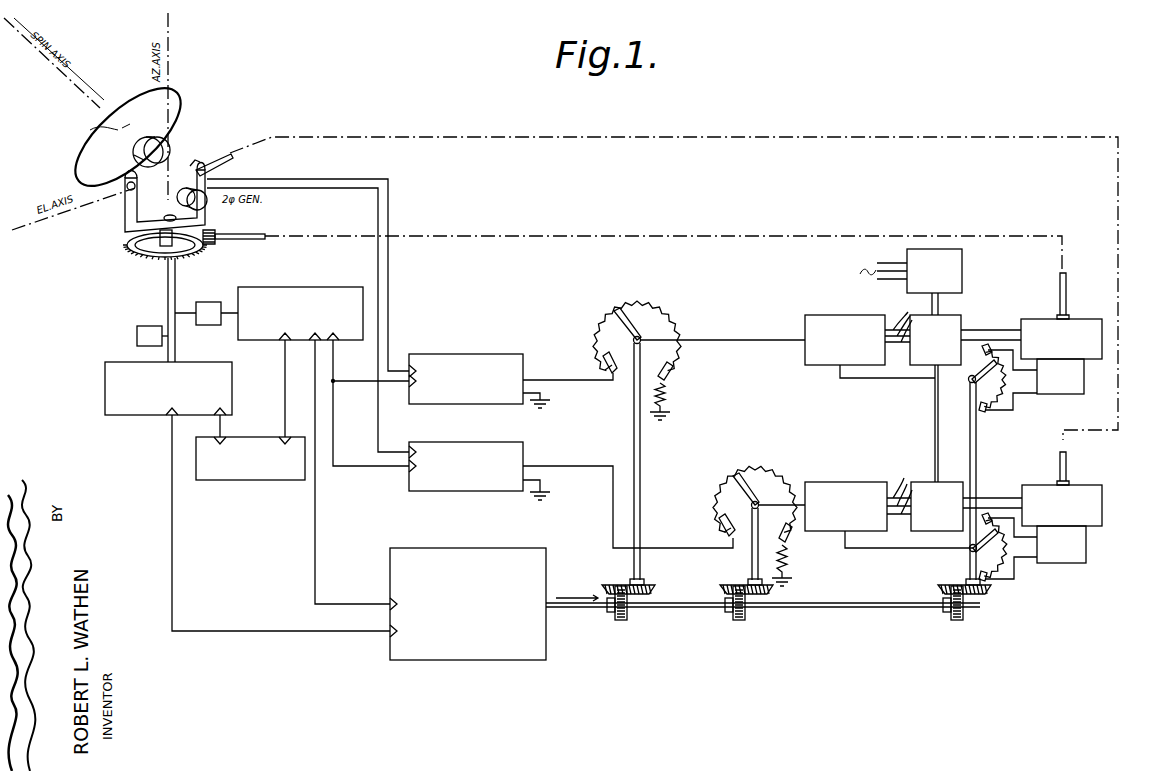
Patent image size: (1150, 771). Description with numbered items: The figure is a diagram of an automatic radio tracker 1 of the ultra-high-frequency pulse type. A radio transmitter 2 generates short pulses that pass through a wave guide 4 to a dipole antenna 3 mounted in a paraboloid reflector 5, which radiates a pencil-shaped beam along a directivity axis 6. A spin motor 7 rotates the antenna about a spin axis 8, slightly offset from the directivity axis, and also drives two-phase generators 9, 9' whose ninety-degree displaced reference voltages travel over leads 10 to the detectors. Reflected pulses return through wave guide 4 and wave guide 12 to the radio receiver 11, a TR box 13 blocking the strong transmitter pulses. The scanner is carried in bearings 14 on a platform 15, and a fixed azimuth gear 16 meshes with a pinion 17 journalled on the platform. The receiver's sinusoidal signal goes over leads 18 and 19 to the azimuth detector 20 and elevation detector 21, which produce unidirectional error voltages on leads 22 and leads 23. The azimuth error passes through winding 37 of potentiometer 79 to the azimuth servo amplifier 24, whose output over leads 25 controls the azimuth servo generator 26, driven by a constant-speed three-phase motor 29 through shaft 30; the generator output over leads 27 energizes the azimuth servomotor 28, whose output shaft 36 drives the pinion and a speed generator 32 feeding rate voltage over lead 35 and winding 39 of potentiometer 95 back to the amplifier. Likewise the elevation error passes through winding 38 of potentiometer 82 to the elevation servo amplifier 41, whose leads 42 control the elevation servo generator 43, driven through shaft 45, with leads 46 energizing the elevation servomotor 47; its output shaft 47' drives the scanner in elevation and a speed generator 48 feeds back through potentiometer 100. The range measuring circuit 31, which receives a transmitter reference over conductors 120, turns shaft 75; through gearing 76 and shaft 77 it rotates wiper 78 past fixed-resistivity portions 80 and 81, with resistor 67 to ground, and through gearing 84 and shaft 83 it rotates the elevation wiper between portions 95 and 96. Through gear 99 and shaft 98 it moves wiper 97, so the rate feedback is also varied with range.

The radio tracker 1 is at (195, 86).
The radio transmitter 2 is at (104, 394).
The antenna 3 is at (78, 148).
The wave guide 4 is at (164, 292).
The paraboloid reflector 5 is at (84, 133).
The directivity axis 6 is at (52, 80).
The spin motor 7 is at (180, 146).
The spin axis 8 is at (96, 100).
The two-phase generator 9 is at (146, 198).
The two-phase generator 9' is at (204, 203).
The leads 10 is at (378, 207).
The radio receiver 11 is at (293, 288).
The wave guide 12 is at (184, 316).
The TR box 13 is at (209, 302).
The bearings 14 is at (222, 170).
The platform 15 is at (142, 248).
The fixed azimuth gear 16 is at (194, 250).
The pinion 17 is at (214, 242).
The lead 18 is at (353, 384).
The lead 19 is at (353, 470).
The azimuth detector 20 is at (455, 353).
The elevation detector 21 is at (467, 441).
The leads 22 is at (544, 386).
The leads 23 is at (546, 470).
The azimuth servo amplifier 24 is at (814, 315).
The amplifier to generator leads 25 is at (902, 330).
The azimuth servo generator 26 is at (958, 322).
The generator to motor leads 27 is at (1004, 314).
The azimuth servomotor 28 is at (1088, 319).
The three-phase motor 29 is at (962, 258).
The shaft 30 is at (940, 304).
The range measuring circuit 31 is at (469, 548).
The speed generator 32 is at (1062, 388).
The feedback lead 35 is at (880, 380).
The output shaft 36 is at (1066, 282).
The potentiometer winding 37 is at (664, 316).
The potentiometer winding 38 is at (772, 470).
The potentiometer winding 39 is at (996, 400).
The elevation servo amplifier 41 is at (834, 482).
The leads 42 is at (898, 496).
The elevation servo generator 43 is at (932, 534).
The shaft 45 is at (944, 458).
The leads 46 is at (994, 502).
The elevation servomotor 47 is at (1070, 491).
The output shaft 47' is at (1079, 465).
The speed generator 48 is at (1086, 550).
The resistor 67 is at (668, 398).
The shaft 75 is at (692, 606).
The gearing 76 is at (620, 612).
The shaft 77 is at (640, 474).
The wiper 78 is at (644, 302).
The potentiometer 79 is at (595, 310).
The fixed resistivity portion 80 is at (600, 358).
The fixed resistivity portion 81 is at (668, 372).
The potentiometer 82 is at (726, 470).
The shaft 83 is at (751, 565).
The gearing 84 is at (748, 610).
The fixed resistivity portion 95 is at (726, 538).
The fixed resistivity portion 96 is at (786, 538).
The wiper 97 is at (994, 368).
The shaft 98 is at (968, 424).
The gear 99 is at (962, 604).
The potentiometer 100 is at (968, 560).
The conductors 120 is at (234, 630).